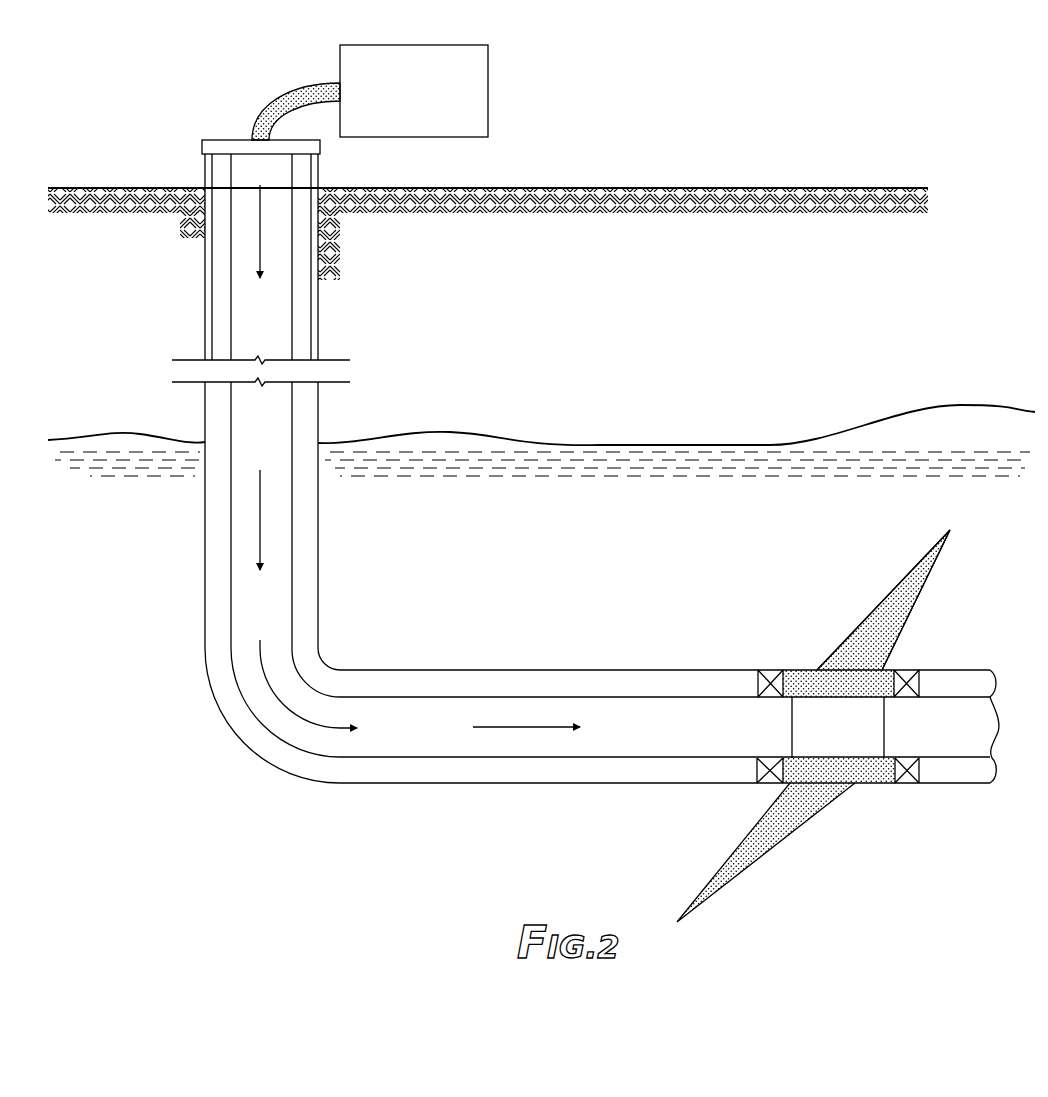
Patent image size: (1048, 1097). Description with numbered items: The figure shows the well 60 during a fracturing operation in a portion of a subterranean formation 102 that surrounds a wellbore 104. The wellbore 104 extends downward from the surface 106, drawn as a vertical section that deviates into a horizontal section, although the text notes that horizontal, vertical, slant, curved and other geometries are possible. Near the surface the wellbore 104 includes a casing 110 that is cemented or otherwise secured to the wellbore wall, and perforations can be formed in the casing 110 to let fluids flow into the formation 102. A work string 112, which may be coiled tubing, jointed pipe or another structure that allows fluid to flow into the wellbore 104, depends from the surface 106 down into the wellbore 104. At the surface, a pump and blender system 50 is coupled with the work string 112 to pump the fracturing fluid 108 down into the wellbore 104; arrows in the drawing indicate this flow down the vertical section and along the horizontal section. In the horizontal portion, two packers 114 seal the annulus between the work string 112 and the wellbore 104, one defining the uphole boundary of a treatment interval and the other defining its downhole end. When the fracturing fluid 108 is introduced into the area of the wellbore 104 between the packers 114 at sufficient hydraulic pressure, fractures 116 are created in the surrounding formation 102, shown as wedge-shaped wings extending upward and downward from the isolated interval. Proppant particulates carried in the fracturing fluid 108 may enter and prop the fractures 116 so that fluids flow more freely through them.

The pump and blender system 50 is at (424, 101).
The well 60 is at (222, 733).
The subterranean formation 102 is at (545, 510).
The wellbore 104 is at (218, 263).
The surface 106 is at (769, 188).
The fracturing fluid 108 is at (293, 93).
The casing 110 is at (206, 307).
The work string 112 is at (231, 587).
The packers 114 is at (770, 670).
The fractures 116 is at (860, 600).